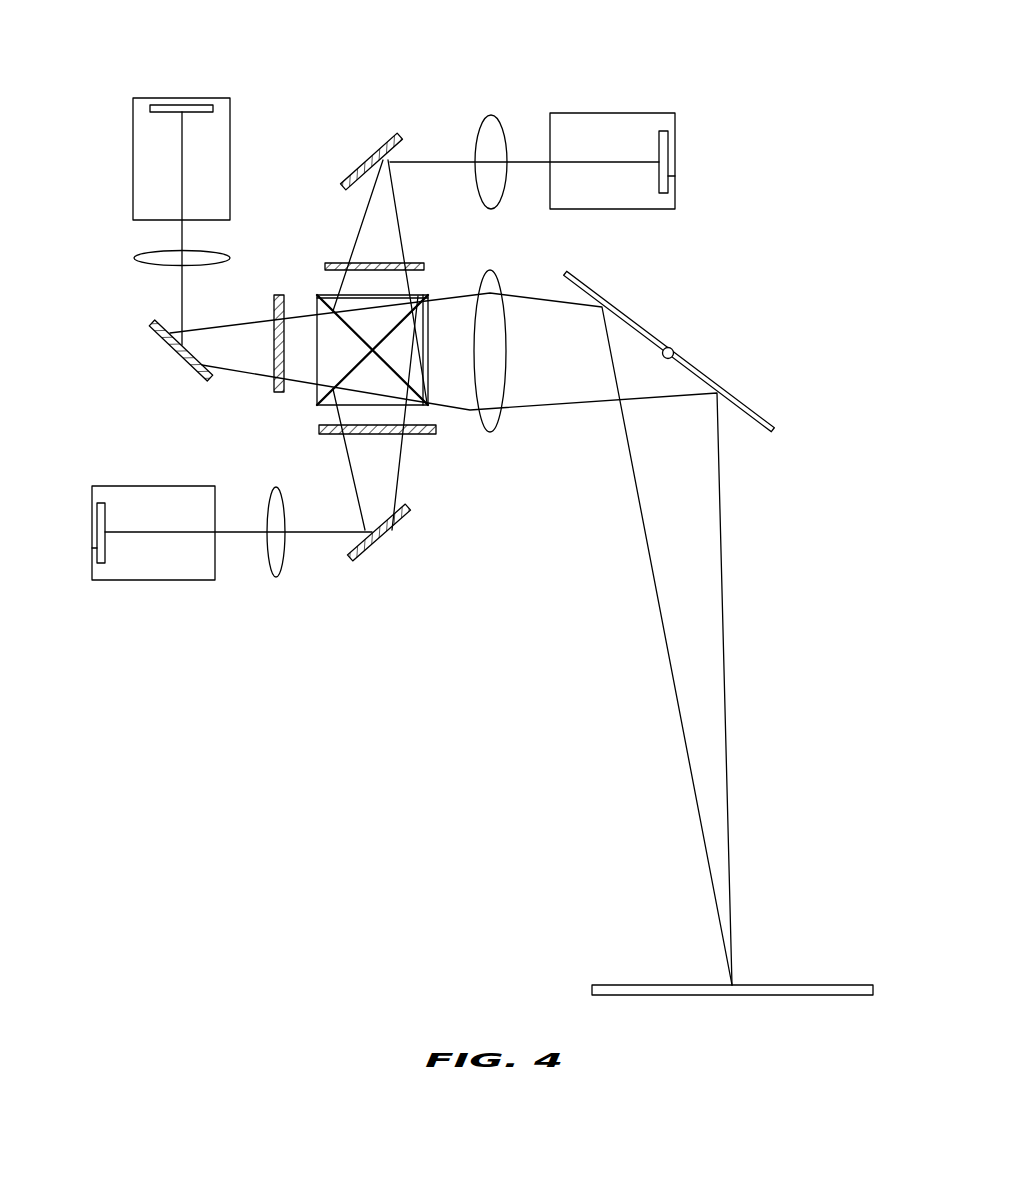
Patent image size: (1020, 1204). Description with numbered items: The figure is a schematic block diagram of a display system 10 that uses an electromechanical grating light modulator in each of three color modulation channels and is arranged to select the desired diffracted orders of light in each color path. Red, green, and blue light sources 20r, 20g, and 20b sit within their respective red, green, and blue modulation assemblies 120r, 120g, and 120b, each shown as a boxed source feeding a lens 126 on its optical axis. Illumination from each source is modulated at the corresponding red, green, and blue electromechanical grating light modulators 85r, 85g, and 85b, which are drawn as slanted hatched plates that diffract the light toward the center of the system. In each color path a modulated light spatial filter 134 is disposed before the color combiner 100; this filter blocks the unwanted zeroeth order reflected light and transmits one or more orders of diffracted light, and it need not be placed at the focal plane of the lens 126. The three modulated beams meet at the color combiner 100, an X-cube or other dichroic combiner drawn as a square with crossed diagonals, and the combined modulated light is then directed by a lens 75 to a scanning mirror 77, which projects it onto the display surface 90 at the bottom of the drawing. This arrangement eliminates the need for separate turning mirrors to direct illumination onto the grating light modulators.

The display system 10 is at (412, 804).
The green light source 20g is at (218, 98).
The red light source 20r is at (577, 113).
The blue light source 20b is at (148, 486).
The green modulation assembly 120g is at (133, 56).
The red modulation assembly 120r is at (549, 46).
The blue modulation assembly 120b is at (193, 620).
The lens 126 is at (140, 260).
The red electromechanical grating light modulator 85r is at (388, 133).
The green electromechanical grating light modulator 85g is at (172, 352).
The blue electromechanical grating light modulator 85b is at (365, 560).
The modulated light spatial filter 134 is at (338, 263).
The color combiner 100 is at (430, 297).
The lens 75 is at (498, 423).
The scanning mirror 77 is at (612, 302).
The display surface 90 is at (620, 985).